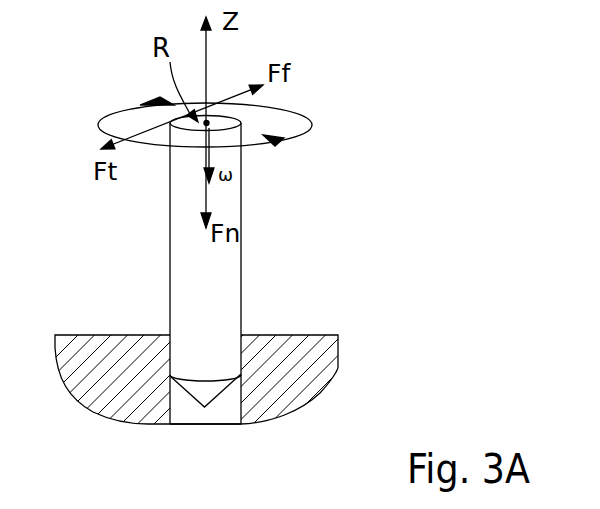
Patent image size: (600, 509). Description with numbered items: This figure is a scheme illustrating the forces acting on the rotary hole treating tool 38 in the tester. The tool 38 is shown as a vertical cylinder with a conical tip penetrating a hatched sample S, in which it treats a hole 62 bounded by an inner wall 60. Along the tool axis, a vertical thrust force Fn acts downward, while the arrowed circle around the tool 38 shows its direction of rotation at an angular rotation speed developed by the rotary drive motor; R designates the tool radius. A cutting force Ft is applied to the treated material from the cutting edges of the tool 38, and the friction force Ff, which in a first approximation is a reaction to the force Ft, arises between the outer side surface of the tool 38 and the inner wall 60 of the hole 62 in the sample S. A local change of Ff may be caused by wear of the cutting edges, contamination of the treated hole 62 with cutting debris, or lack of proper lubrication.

The hole treating tool 38 is at (242, 238).
The inner wall 60 is at (172, 406).
The hole 62 is at (232, 422).
The sample S is at (322, 358).